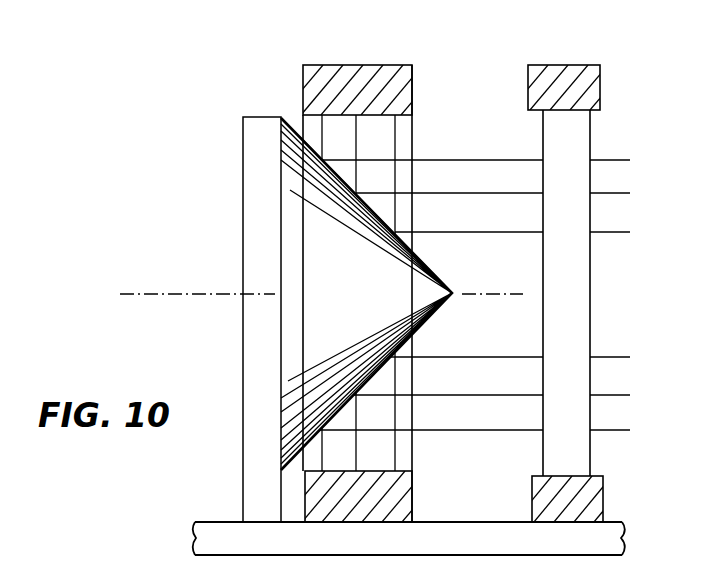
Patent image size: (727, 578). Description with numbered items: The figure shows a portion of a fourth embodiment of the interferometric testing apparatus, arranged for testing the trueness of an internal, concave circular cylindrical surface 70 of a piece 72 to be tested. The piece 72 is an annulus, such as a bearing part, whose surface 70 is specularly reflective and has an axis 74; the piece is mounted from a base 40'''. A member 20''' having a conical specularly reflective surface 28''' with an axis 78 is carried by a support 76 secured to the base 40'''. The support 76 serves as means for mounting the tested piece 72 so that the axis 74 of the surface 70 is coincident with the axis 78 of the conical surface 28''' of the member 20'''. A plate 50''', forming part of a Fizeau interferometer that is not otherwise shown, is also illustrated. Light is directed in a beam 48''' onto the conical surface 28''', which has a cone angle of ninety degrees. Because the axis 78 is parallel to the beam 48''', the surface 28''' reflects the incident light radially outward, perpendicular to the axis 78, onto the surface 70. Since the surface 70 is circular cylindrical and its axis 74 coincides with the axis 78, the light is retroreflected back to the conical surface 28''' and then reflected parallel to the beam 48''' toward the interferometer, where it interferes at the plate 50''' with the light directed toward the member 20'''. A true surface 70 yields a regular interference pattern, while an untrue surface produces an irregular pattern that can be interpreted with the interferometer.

The member 20''' is at (400, 294).
The conical specularly reflective surface 28''' is at (385, 215).
The base 40''' is at (397, 505).
The beam 48''' is at (627, 265).
The plate 50''' is at (584, 293).
The internal circular cylindrical surface 70 is at (413, 131).
The piece to be tested 72 is at (308, 94).
The axis 74 is at (180, 293).
The support 76 is at (253, 213).
The axis 78 is at (502, 290).